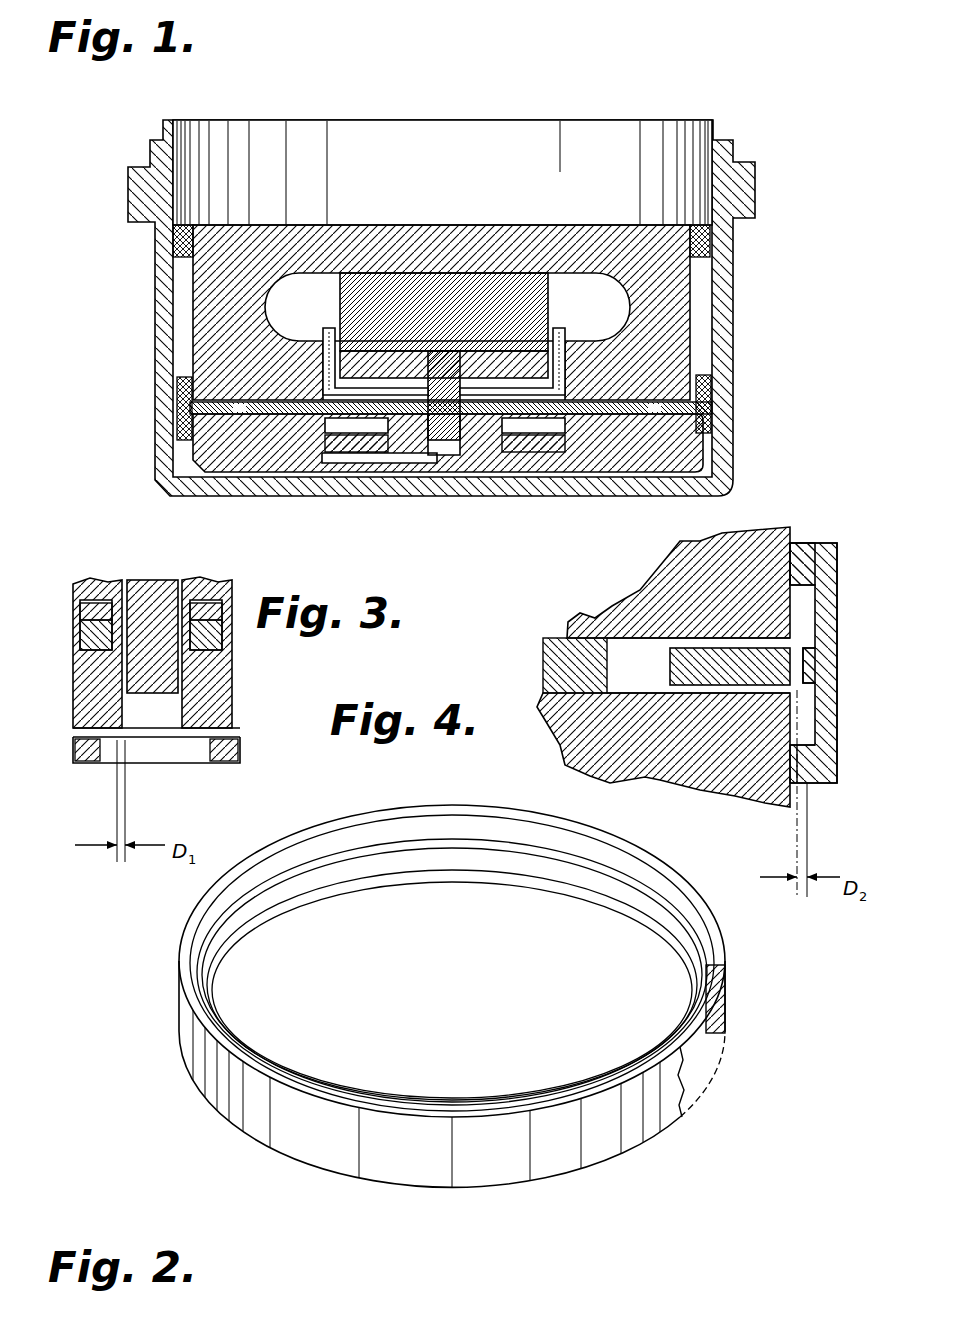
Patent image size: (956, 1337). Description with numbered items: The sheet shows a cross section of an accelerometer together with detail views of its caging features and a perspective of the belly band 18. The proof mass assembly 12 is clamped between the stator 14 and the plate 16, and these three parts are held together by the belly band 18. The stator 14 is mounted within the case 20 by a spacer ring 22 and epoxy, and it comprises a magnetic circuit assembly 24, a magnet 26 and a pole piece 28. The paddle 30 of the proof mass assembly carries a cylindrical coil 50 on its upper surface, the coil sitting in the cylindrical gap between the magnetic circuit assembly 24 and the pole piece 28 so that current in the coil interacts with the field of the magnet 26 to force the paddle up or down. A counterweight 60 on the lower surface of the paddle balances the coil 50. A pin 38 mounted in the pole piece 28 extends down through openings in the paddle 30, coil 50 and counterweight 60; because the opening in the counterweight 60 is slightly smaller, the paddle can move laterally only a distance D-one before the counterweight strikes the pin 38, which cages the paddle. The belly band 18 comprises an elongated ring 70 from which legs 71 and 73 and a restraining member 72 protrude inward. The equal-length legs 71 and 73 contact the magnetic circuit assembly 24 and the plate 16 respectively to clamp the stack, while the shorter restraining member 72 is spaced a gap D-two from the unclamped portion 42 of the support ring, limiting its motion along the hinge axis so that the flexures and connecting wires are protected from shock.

In FIG. 1, the proof mass assembly 12 is at (262, 405).
In FIG. 1, the stator 14 is at (205, 288).
In FIG. 1, the plate 16 is at (242, 456).
In FIG. 4, the plate 16 is at (730, 780).
In FIG. 1, the belly band 18 is at (190, 408).
In FIG. 4, the belly band 18 is at (826, 538).
In FIG. 2, the belly band 18 is at (422, 982).
In FIG. 1, the case 20 is at (722, 292).
In FIG. 1, the spacer ring 22 is at (714, 240).
In FIG. 1, the magnetic circuit assembly 24 is at (480, 235).
In FIG. 1, the magnet 26 is at (410, 272).
In FIG. 1, the pole piece 28 is at (355, 350).
In FIG. 3, the paddle 30 is at (82, 636).
In FIG. 1, the pin 38 is at (442, 440).
In FIG. 3, the pin 38 is at (148, 596).
In FIG. 4, the unclamped portion 42 is at (687, 667).
In FIG. 1, the coil 50 is at (330, 328).
In FIG. 3, the coil 50 is at (88, 608).
In FIG. 4, the coil 50 is at (663, 606).
In FIG. 1, the counterweight 60 is at (492, 442).
In FIG. 3, the counterweight 60 is at (90, 702).
In FIG. 4, the elongated ring 70 is at (818, 598).
In FIG. 2, the elongated ring 70 is at (600, 1138).
In FIG. 4, the leg 71 is at (800, 550).
In FIG. 2, the leg 71 is at (372, 830).
In FIG. 4, the restraining member 72 is at (814, 665).
In FIG. 2, the restraining member 72 is at (435, 845).
In FIG. 4, the leg 73 is at (812, 770).
In FIG. 2, the leg 73 is at (556, 886).